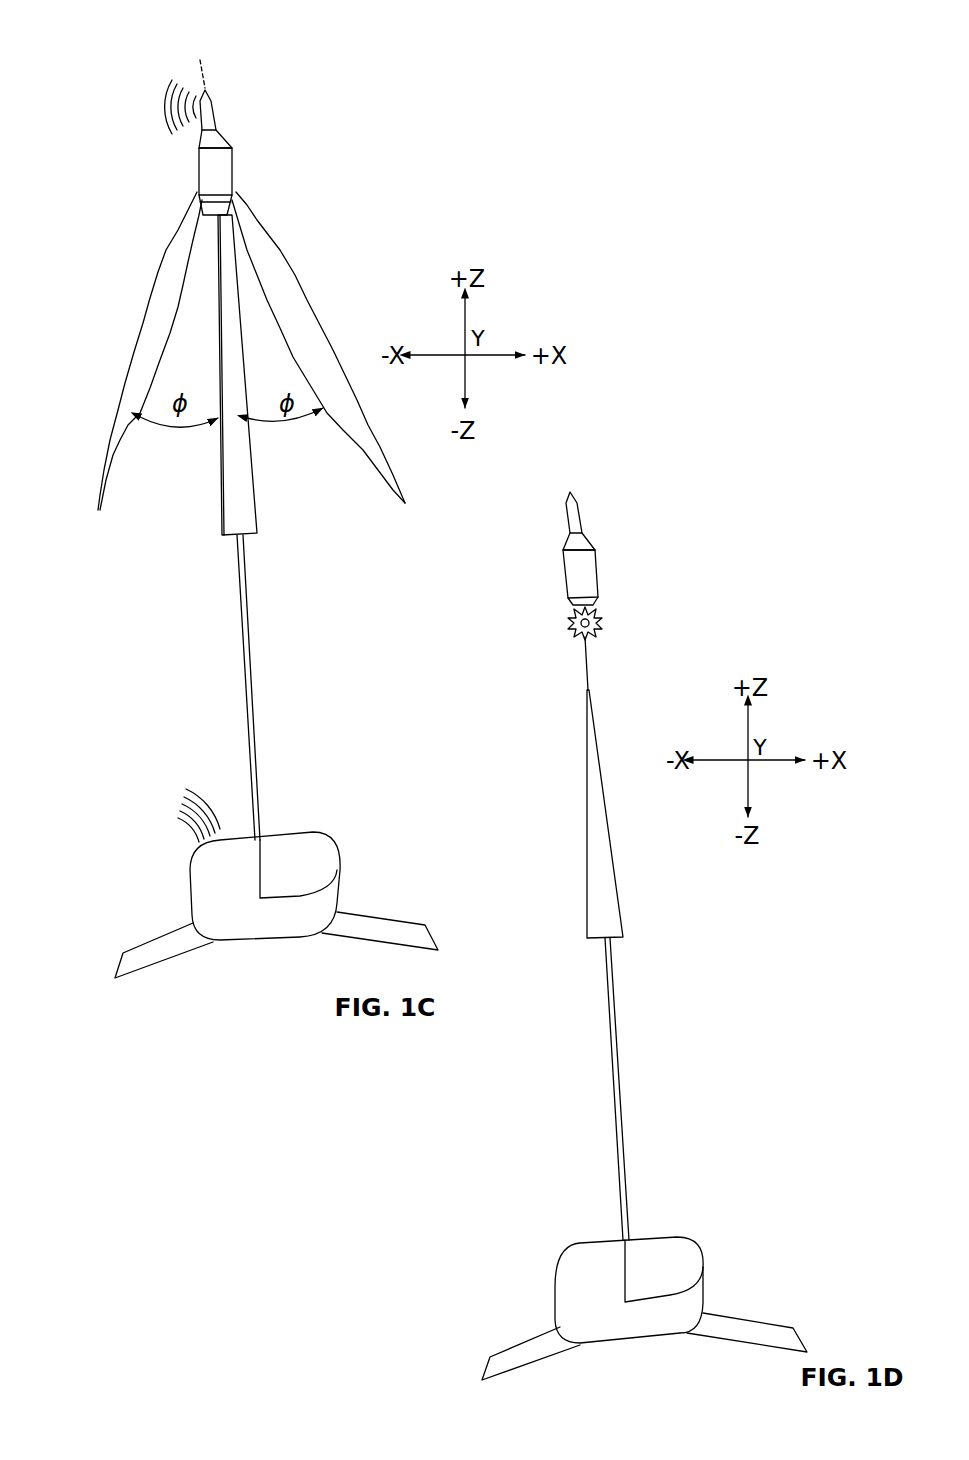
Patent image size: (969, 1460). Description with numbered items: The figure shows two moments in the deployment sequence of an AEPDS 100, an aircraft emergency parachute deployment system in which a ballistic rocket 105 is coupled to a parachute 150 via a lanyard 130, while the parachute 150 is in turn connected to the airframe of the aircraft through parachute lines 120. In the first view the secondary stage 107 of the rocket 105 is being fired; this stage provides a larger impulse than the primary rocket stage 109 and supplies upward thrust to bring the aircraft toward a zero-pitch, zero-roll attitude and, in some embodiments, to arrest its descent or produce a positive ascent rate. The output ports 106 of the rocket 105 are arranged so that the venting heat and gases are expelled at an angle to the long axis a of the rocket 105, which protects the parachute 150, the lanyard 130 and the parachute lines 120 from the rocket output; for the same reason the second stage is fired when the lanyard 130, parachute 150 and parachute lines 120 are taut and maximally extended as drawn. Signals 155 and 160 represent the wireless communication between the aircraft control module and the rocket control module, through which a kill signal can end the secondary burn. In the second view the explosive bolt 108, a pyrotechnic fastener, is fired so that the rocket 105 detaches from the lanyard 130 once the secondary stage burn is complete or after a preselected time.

In FIG. 1C, the AEPDS 100 is at (332, 53).
In FIG. 1D, the AEPDS 100 is at (720, 468).
In FIG. 1C, the ballistic rocket 105 is at (200, 146).
In FIG. 1D, the ballistic rocket 105 is at (575, 542).
In FIG. 1C, the output ports 106 is at (198, 188).
In FIG. 1C, the secondary stage 107 is at (230, 162).
In FIG. 1D, the secondary stage 107 is at (598, 562).
In FIG. 1D, the explosive bolt 108 is at (570, 620).
In FIG. 1C, the primary rocket stage 109 is at (213, 108).
In FIG. 1D, the primary rocket stage 109 is at (582, 508).
In FIG. 1C, the parachute lines 120 is at (256, 645).
In FIG. 1D, the parachute lines 120 is at (617, 1045).
In FIG. 1C, the lanyard 130 is at (230, 283).
In FIG. 1D, the lanyard 130 is at (593, 665).
In FIG. 1C, the parachute 150 is at (257, 482).
In FIG. 1D, the parachute 150 is at (618, 882).
In FIG. 1C, the signals 155 is at (182, 825).
In FIG. 1C, the signals 160 is at (152, 113).
In FIG. 1C, the long axis a is at (205, 67).